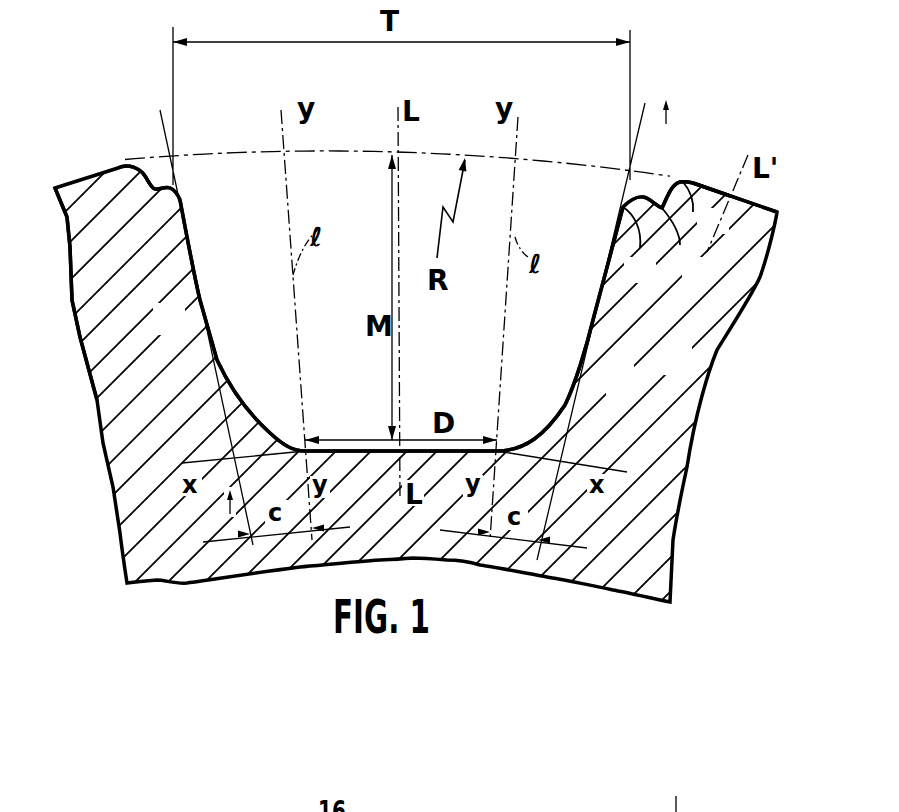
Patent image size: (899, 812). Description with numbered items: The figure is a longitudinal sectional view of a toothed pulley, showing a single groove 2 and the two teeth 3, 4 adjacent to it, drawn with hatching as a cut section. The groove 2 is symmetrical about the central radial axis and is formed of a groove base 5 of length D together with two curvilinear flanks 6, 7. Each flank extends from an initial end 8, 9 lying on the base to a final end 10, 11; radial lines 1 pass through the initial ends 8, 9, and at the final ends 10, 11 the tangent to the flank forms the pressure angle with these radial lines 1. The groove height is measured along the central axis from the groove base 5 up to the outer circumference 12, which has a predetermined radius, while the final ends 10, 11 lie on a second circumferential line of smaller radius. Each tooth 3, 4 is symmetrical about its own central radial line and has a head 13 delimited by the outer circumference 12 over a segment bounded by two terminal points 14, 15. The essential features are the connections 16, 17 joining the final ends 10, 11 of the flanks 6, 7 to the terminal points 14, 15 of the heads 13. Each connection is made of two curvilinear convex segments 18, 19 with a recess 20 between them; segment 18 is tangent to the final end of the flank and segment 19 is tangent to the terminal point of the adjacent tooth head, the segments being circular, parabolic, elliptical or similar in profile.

The radial lines 1 is at (424, 102).
The groove 2 is at (327, 283).
The tooth 3 is at (677, 275).
The tooth 4 is at (120, 280).
The groove base 5 is at (418, 443).
The curvilinear flank 6 is at (578, 378).
The curvilinear flank 7 is at (224, 372).
The initial end 8 is at (500, 447).
The initial end 9 is at (301, 450).
The final end 10 is at (626, 215).
The final end 11 is at (184, 262).
The outer circumference 12 is at (152, 168).
The head 13 is at (720, 200).
The terminal point 14 is at (693, 182).
The terminal point 15 is at (126, 167).
The connection 16 is at (643, 186).
The connection 17 is at (194, 189).
The curvilinear convex segment 18 is at (656, 250).
The curvilinear convex segment 19 is at (697, 208).
The recess 20 is at (703, 248).